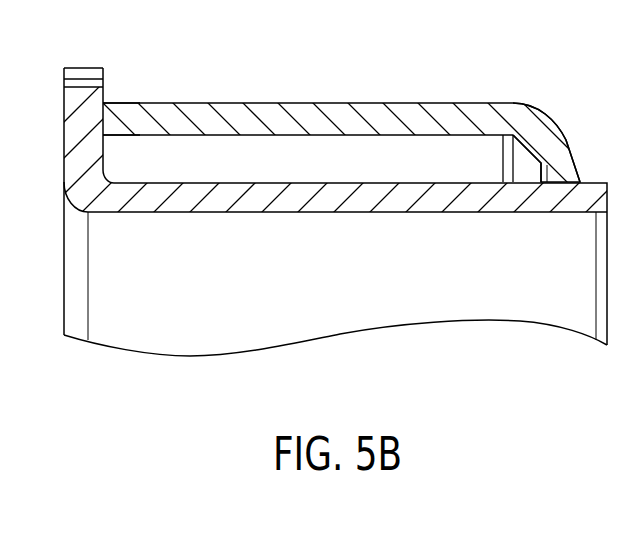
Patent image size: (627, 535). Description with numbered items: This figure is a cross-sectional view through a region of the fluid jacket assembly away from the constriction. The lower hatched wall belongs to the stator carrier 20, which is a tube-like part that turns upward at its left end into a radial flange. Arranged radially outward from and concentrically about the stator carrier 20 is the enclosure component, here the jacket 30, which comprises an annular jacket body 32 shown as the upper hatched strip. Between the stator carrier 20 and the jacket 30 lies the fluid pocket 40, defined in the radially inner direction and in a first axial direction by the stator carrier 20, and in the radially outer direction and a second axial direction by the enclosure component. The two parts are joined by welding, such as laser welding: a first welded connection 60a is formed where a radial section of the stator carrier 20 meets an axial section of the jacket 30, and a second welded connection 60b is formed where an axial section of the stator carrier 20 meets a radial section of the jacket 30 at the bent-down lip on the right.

The stator carrier 20 is at (168, 192).
The jacket 30 is at (363, 112).
The annular jacket body 32 is at (442, 112).
The fluid pocket 40 is at (247, 152).
The first welded connection 60a is at (105, 113).
The second welded connection 60b is at (575, 183).